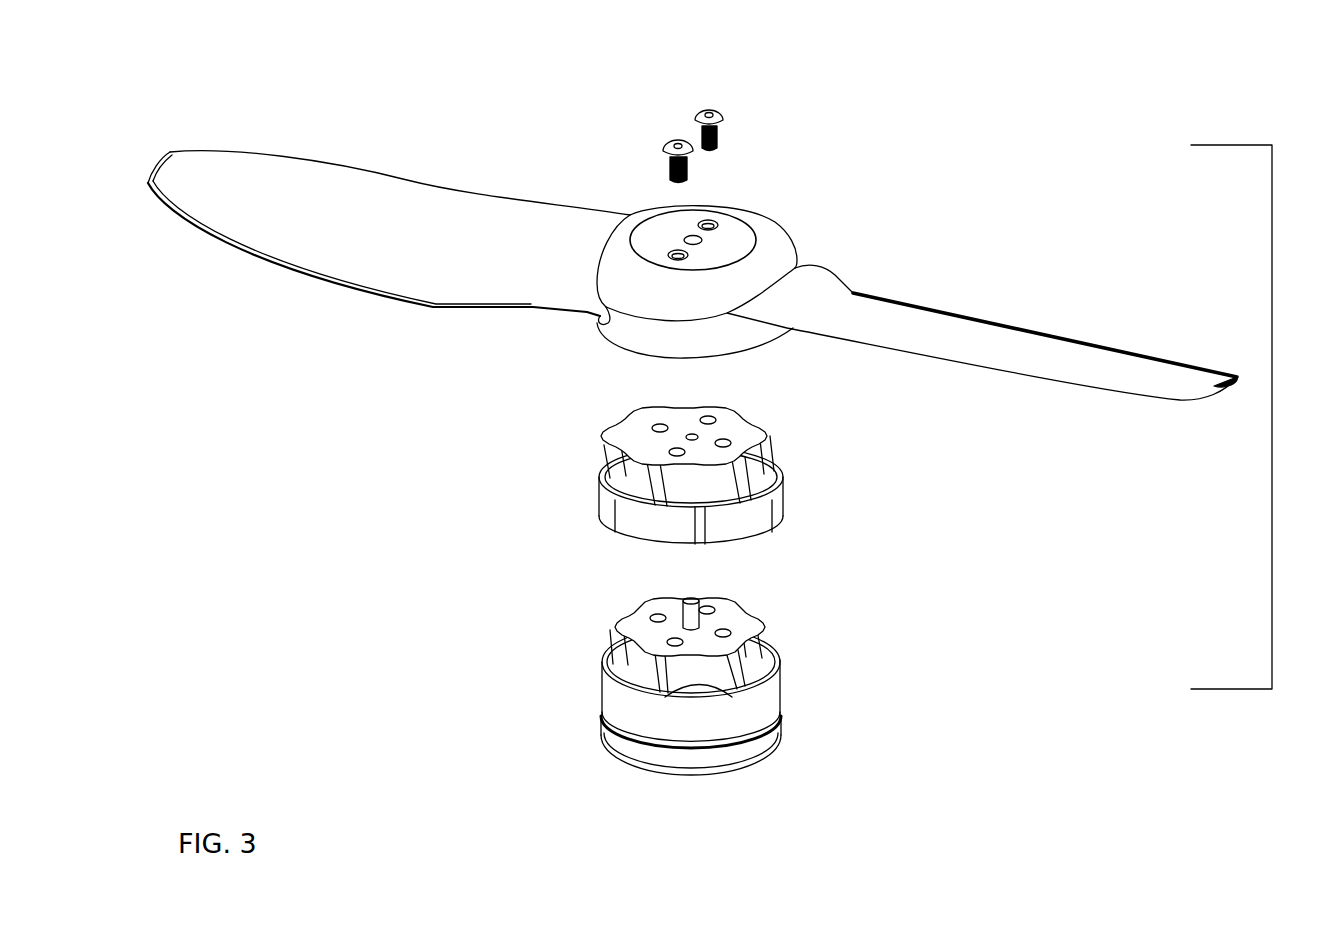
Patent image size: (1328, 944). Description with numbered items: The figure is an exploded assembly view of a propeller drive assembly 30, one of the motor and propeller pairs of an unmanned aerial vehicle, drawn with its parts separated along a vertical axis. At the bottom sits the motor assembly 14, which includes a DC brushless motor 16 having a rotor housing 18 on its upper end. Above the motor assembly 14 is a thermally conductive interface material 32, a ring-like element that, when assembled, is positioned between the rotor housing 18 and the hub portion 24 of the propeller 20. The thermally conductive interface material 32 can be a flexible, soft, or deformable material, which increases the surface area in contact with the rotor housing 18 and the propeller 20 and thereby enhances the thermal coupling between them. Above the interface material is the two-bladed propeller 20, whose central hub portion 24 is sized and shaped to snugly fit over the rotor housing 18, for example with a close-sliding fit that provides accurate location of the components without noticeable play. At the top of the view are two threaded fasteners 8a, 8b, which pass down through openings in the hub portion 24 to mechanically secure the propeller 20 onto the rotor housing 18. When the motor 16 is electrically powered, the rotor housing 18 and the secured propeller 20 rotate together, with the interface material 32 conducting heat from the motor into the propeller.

The propeller 20 is at (307, 152).
The hub portion 24 is at (783, 244).
The threaded fastener 8a is at (733, 117).
The threaded fastener 8b is at (658, 140).
The thermally conductive interface material 32 is at (795, 486).
The motor assembly 14 is at (698, 686).
The rotor housing 18 is at (600, 657).
The DC brushless motor 16 is at (597, 725).
The propeller drive assembly 30 is at (1259, 417).